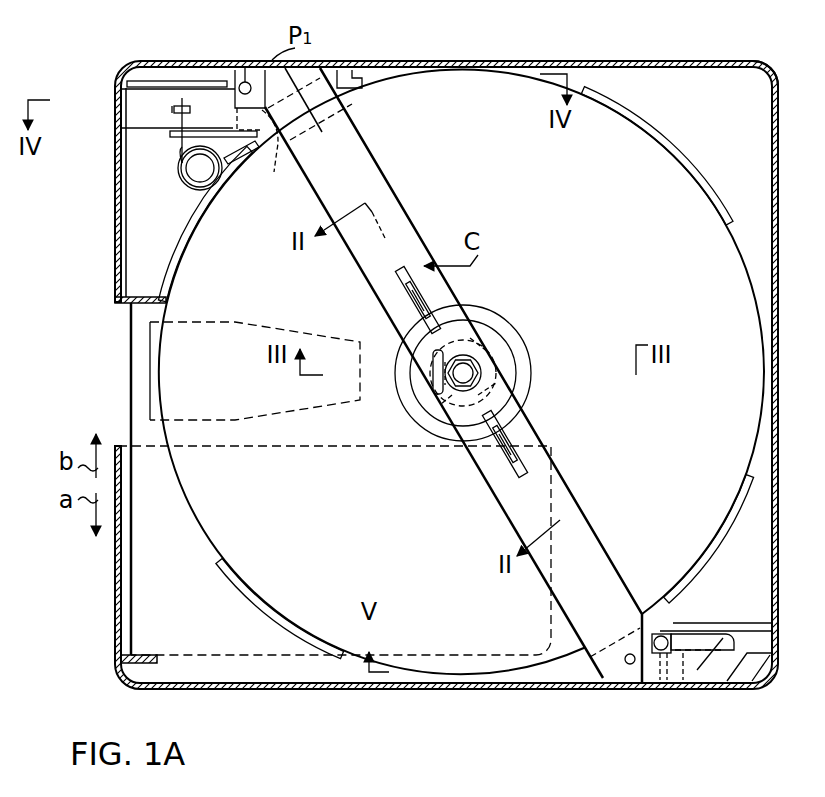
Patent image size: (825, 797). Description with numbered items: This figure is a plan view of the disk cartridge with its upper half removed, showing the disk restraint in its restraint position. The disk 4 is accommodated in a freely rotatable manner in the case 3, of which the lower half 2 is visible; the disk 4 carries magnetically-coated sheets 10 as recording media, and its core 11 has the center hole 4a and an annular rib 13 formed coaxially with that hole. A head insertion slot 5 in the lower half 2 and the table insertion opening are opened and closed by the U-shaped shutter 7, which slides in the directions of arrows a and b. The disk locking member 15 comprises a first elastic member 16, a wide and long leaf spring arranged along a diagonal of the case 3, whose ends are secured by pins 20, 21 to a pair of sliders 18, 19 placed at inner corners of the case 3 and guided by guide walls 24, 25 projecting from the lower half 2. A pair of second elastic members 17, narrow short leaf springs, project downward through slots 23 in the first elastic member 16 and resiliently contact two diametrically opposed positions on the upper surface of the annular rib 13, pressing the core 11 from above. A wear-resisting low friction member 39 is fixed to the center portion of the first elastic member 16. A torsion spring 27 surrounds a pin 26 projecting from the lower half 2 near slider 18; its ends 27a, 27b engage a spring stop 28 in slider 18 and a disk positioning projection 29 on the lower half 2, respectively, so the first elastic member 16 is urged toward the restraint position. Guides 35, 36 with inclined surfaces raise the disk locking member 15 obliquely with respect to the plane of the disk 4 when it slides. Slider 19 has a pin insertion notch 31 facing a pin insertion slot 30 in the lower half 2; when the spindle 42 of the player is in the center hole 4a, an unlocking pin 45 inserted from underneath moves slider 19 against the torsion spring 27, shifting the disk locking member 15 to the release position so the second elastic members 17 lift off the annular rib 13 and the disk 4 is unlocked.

The lower half 2 is at (700, 85).
The case 3 is at (774, 66).
The disk 4 is at (439, 662).
The center hole 4a is at (475, 375).
The head insertion slot 5 is at (150, 357).
The shutter 7 is at (190, 650).
The magnetically-coated sheet 10 is at (314, 622).
The core 11 is at (503, 345).
The annular rib 13 is at (527, 385).
The disk locking member 15 is at (619, 494).
The first elastic member 16 is at (395, 210).
The second elastic member 17 is at (396, 275).
The slider 18 is at (167, 102).
The slider 19 is at (693, 672).
The pin 20 is at (245, 68).
The pin 21 is at (628, 665).
The slot 23 is at (418, 308).
The guide wall 24 is at (200, 82).
The guide wall 25 is at (765, 628).
The pin 26 is at (197, 173).
The torsion spring 27 is at (178, 155).
The spring end 27a is at (182, 100).
The spring end 27b is at (250, 153).
The spring stop 28 is at (172, 110).
The disk positioning projection 29 is at (188, 252).
The pin insertion slot 30 is at (700, 638).
The pin insertion notch 31 is at (657, 654).
The guide 35 is at (355, 68).
The guide 36 is at (683, 672).
The low friction member 39 is at (452, 378).
The spindle 42 is at (452, 392).
The unlocking pin 45 is at (660, 636).